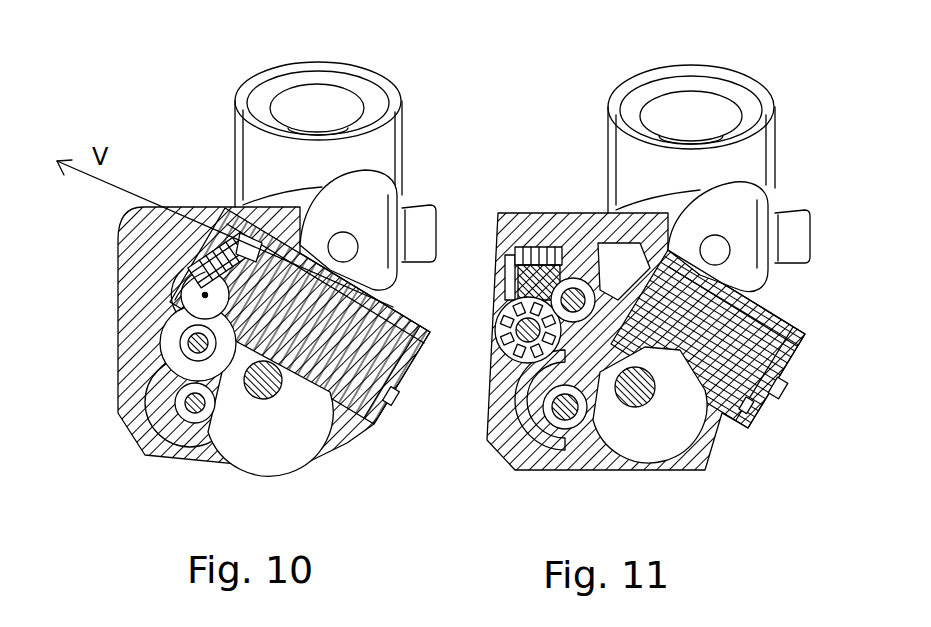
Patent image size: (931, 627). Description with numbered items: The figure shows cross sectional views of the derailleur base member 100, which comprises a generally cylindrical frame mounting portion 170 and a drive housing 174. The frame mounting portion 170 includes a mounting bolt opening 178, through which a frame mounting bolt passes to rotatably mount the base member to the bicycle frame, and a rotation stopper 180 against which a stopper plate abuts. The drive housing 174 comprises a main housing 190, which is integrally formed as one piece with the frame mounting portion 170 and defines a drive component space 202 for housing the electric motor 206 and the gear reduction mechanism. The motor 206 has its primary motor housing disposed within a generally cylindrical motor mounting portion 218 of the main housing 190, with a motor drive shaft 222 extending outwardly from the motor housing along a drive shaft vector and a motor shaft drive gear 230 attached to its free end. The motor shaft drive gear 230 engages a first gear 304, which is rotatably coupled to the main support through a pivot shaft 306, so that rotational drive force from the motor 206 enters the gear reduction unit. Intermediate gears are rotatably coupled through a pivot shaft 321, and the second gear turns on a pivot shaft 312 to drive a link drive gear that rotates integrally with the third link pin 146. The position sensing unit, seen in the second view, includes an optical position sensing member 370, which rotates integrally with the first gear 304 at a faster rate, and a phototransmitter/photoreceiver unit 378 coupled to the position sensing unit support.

In FIG. 10, the base member 100 is at (242, 269).
In FIG. 11, the base member 100 is at (655, 276).
In FIG. 10, the frame mounting portion 170 is at (307, 115).
In FIG. 11, the frame mounting portion 170 is at (676, 118).
In FIG. 10, the mounting bolt opening 178 is at (347, 104).
In FIG. 11, the mounting bolt opening 178 is at (716, 113).
In FIG. 10, the rotation stopper 180 is at (410, 210).
In FIG. 11, the rotation stopper 180 is at (798, 227).
In FIG. 10, the drive housing 174 is at (239, 321).
In FIG. 11, the drive housing 174 is at (644, 321).
In FIG. 10, the main housing 190 is at (127, 380).
In FIG. 11, the main housing 190 is at (498, 443).
In FIG. 10, the drive component space 202 is at (299, 426).
In FIG. 11, the drive component space 202 is at (695, 430).
In FIG. 10, the third link pin 146 is at (274, 387).
In FIG. 11, the third link pin 146 is at (716, 452).
In FIG. 10, the electric motor 206 is at (378, 378).
In FIG. 11, the electric motor 206 is at (777, 383).
In FIG. 10, the motor mounting portion 218 is at (315, 329).
In FIG. 11, the motor mounting portion 218 is at (736, 341).
In FIG. 10, the motor drive shaft 222 is at (197, 233).
In FIG. 10, the motor shaft drive gear 230 is at (217, 227).
In FIG. 10, the first gear 304 is at (190, 293).
In FIG. 10, the pivot shaft 306 is at (202, 295).
In FIG. 11, the pivot shaft 306 is at (575, 298).
In FIG. 10, the pivot shaft 312 is at (195, 410).
In FIG. 11, the pivot shaft 312 is at (565, 420).
In FIG. 10, the pivot shaft 321 is at (196, 343).
In FIG. 11, the pivot shaft 321 is at (525, 396).
In FIG. 11, the optical position sensing member 370 is at (497, 327).
In FIG. 11, the phototransmitter/photoreceiver unit 378 is at (520, 292).